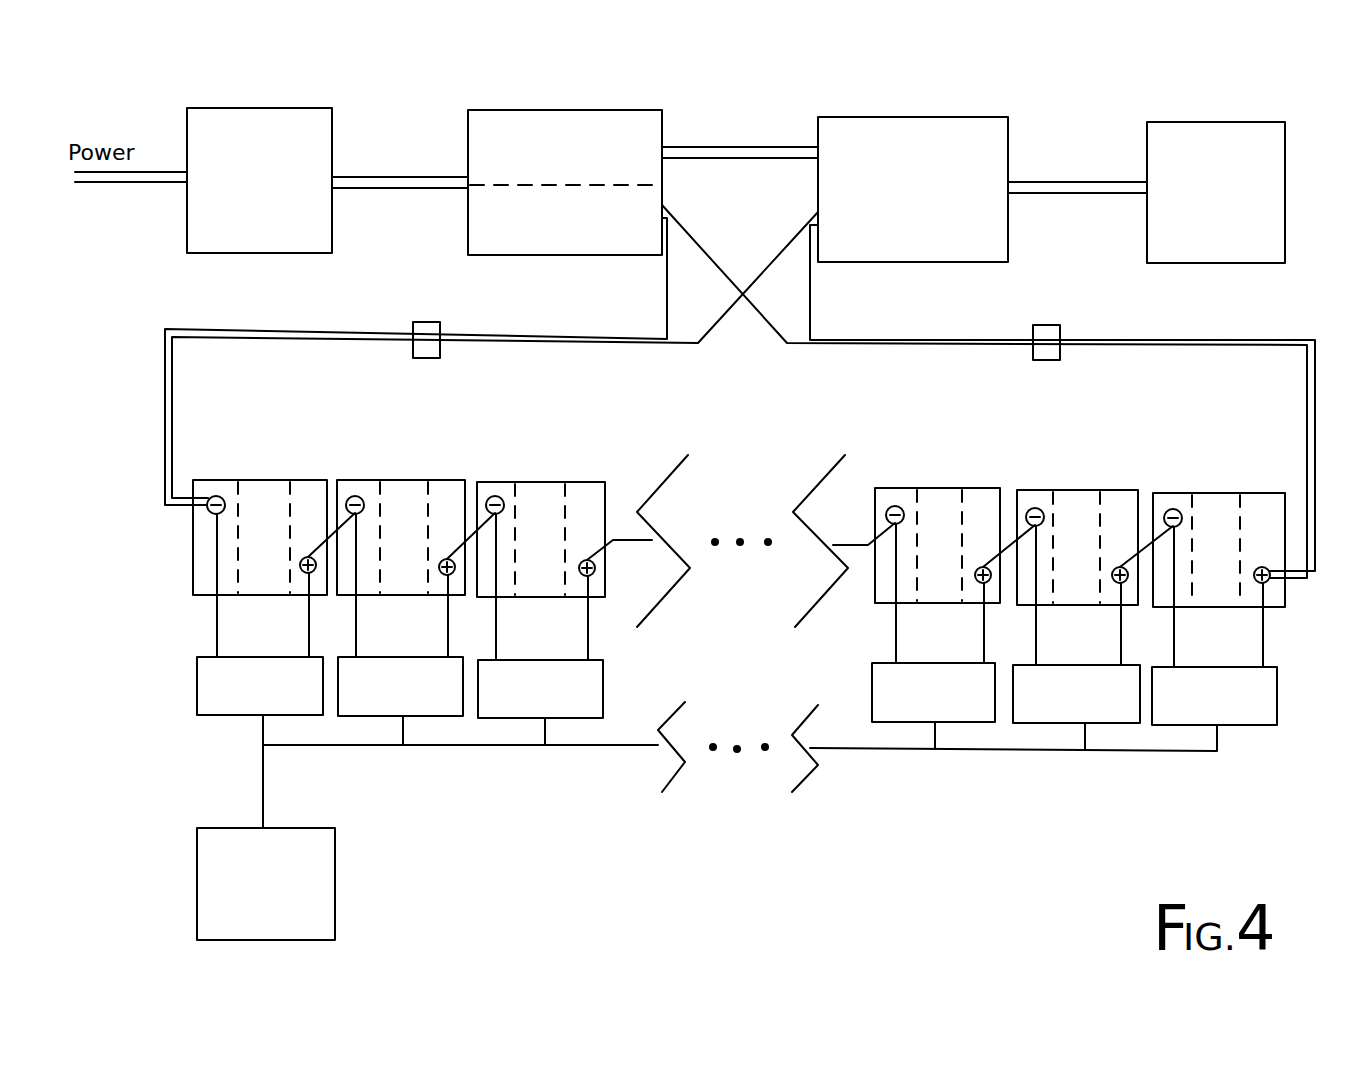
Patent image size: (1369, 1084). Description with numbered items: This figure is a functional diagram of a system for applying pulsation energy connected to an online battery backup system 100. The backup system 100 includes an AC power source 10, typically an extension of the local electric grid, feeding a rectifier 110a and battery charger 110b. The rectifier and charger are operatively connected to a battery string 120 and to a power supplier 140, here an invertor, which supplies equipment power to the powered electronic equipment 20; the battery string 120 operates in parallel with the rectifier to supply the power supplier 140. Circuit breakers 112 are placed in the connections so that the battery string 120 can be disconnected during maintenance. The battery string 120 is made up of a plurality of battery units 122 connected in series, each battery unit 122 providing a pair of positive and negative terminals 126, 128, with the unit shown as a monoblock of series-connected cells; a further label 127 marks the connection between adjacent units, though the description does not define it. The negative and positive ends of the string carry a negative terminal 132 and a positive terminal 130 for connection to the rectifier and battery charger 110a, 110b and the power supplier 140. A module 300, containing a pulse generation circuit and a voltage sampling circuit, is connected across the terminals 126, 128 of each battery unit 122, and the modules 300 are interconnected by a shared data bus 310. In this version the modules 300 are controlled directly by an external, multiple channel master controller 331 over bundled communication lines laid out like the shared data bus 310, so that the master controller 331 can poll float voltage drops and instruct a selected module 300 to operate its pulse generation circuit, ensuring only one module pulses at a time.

The AC power source 10 is at (259, 180).
The rectifier 110a is at (565, 182).
The battery charger 110b is at (565, 220).
The power supplier 140 is at (913, 189).
The powered electronic equipment 20 is at (1216, 192).
The online battery backup system 100 is at (1083, 100).
The circuit breaker 112 is at (438, 293).
The battery string 120 is at (1288, 418).
The battery unit 122 is at (330, 443).
The positive terminal 126 is at (305, 572).
The intercell connector 127 is at (1148, 557).
The negative terminal 128 is at (1170, 509).
The positive terminal 130 is at (1268, 583).
The negative terminal 132 is at (207, 513).
The module 300 is at (737, 691).
The shared data bus 310 is at (265, 780).
The master controller 331 is at (266, 884).